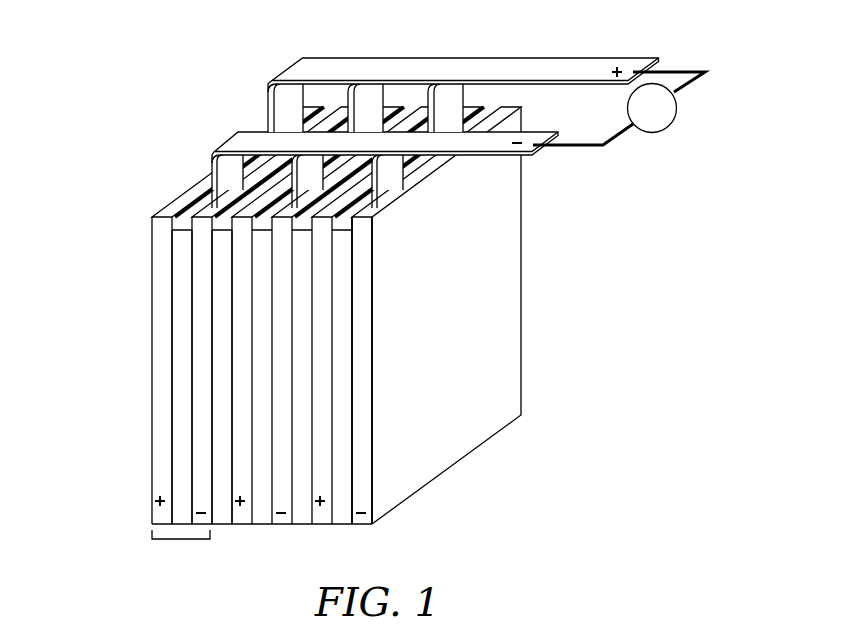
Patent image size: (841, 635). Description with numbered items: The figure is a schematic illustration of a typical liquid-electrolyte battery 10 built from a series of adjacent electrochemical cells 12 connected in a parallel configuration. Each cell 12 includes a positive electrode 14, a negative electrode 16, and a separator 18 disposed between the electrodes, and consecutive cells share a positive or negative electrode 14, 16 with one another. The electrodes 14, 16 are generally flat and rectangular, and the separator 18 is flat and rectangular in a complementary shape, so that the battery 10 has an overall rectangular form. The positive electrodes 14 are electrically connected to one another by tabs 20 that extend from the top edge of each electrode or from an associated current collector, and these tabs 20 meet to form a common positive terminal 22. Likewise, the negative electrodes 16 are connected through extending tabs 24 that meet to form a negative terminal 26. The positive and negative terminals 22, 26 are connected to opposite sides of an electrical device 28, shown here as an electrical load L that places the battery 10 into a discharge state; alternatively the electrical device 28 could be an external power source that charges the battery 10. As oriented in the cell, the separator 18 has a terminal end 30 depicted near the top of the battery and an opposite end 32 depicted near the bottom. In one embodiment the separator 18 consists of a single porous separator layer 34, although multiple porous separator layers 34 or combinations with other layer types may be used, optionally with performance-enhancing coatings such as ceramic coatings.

The liquid-electrolyte battery 10 is at (134, 76).
The electrochemical cell 12 is at (180, 539).
The positive electrode 14 is at (155, 480).
The negative electrode 16 is at (198, 441).
The separator 18 is at (220, 393).
The tab 20 is at (283, 108).
The positive terminal 22 is at (580, 72).
The tab 24 is at (228, 182).
The negative terminal 26 is at (477, 142).
The electrical device 28 is at (677, 116).
The terminal end 30 is at (342, 258).
The opposite end 32 is at (342, 472).
The porous separator layer 34 is at (342, 342).